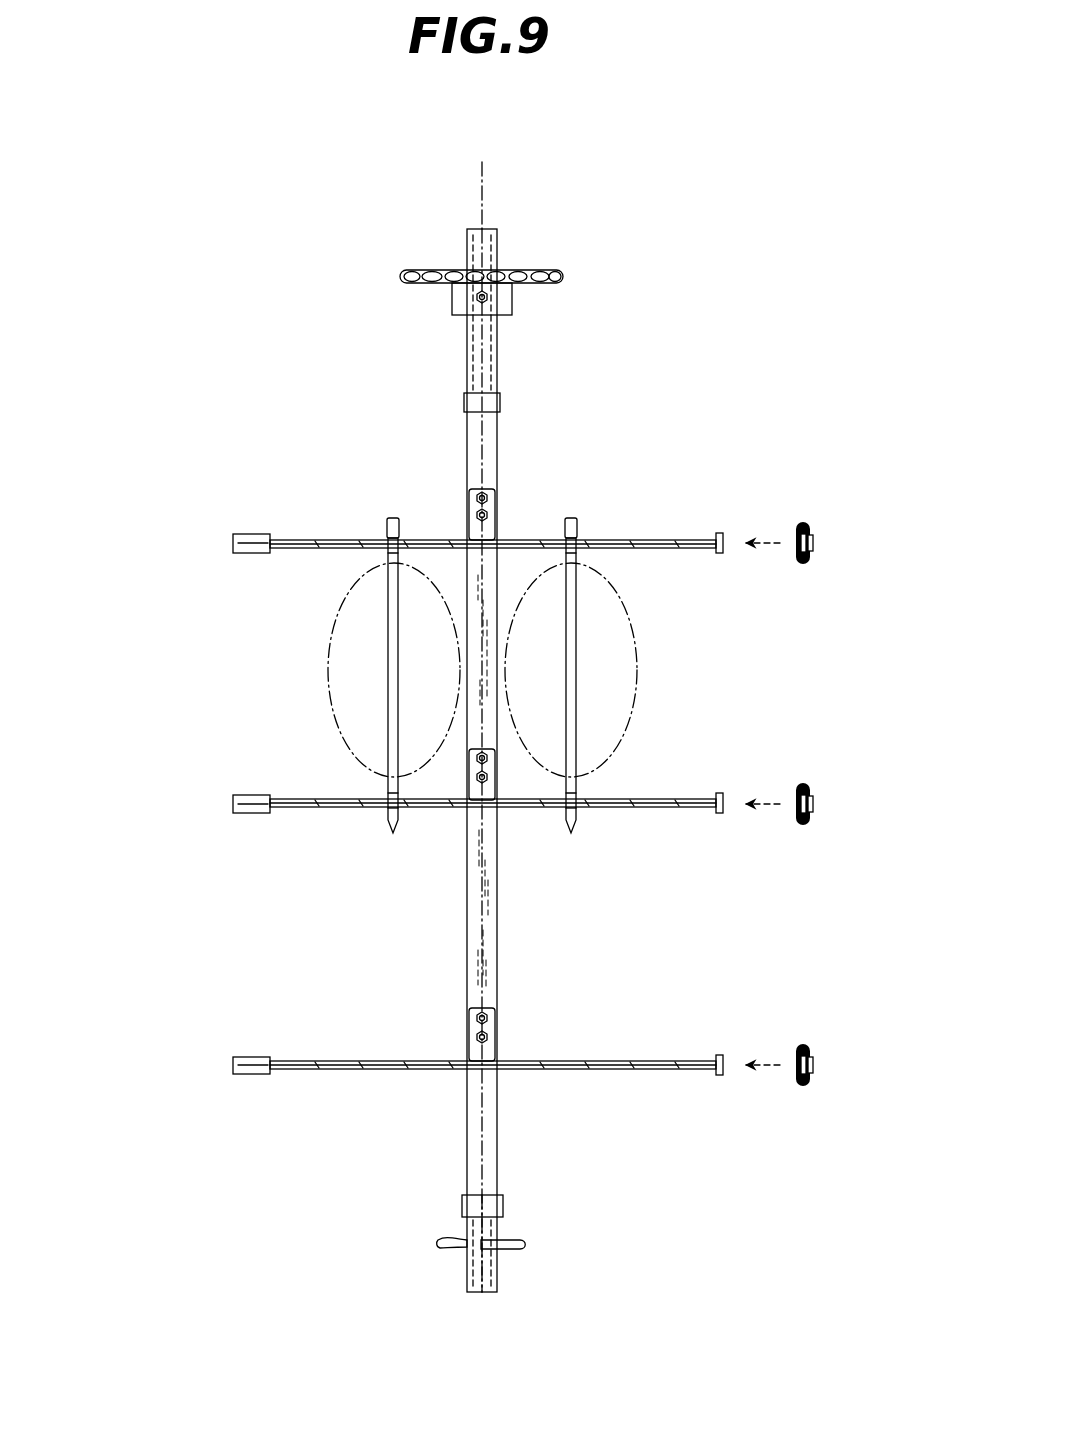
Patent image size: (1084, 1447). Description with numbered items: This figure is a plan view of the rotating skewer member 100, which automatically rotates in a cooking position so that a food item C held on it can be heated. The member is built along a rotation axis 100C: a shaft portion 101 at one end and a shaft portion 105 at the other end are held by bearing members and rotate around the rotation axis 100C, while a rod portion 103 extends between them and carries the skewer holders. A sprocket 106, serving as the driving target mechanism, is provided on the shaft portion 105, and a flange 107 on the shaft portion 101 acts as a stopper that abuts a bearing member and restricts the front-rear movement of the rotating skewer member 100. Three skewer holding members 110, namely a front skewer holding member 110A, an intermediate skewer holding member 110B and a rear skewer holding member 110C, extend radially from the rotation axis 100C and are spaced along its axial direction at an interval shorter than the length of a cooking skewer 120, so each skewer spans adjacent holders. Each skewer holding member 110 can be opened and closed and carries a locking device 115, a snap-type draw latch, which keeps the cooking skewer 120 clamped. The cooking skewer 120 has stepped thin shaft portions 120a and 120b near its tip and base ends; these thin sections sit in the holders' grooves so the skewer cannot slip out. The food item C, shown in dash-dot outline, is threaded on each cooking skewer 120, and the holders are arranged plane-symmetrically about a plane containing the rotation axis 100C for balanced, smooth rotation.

The rotating skewer member 100 is at (850, 352).
The rotation axis 100C is at (483, 183).
The shaft portion 101 is at (522, 1280).
The rod portion 103 is at (487, 933).
The shaft portion 105 is at (528, 348).
The sprocket 106 is at (563, 277).
The flange 107 is at (515, 1243).
The skewer holding member 110 is at (383, 753).
The front skewer holding member 110A is at (211, 1058).
The intermediate skewer holding member 110B is at (211, 796).
The rear skewer holding member 110C is at (211, 531).
The locking device 115 is at (812, 535).
The cooking skewer 120 is at (487, 677).
The stepped thin shaft portion 120a is at (370, 818).
The stepped thin shaft portion 120b is at (373, 526).
The food item C is at (328, 652).